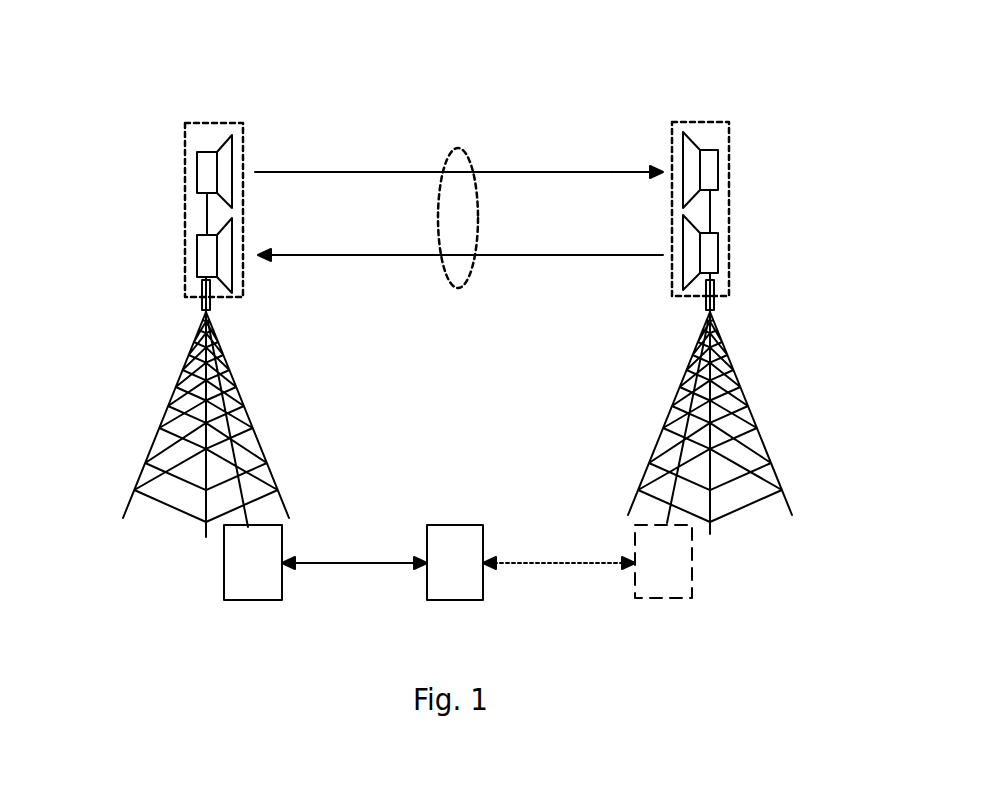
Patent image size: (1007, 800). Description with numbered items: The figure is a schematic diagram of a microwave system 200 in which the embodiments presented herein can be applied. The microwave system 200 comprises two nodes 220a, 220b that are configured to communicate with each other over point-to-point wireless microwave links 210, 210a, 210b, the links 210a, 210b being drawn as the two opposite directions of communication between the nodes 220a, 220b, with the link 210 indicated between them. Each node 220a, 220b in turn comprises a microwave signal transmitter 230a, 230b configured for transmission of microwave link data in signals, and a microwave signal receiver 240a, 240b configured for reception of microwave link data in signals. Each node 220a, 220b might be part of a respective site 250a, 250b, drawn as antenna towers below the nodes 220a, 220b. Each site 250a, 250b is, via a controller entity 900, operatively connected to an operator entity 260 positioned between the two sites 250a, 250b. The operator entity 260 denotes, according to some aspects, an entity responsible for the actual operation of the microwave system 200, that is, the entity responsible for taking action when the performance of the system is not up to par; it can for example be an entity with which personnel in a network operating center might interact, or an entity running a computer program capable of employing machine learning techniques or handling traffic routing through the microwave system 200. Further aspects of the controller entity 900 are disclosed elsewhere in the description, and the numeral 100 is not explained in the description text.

The system (next sheet, partially shown) 100 is at (68, 794).
The microwave system 200 is at (136, 61).
The point-to-point wireless microwave link 210 is at (460, 149).
The point-to-point wireless microwave link 210a is at (555, 172).
The point-to-point wireless microwave link 210b is at (540, 257).
The node 220a is at (187, 208).
The node 220b is at (729, 200).
The microwave signal transmitter 230a is at (196, 164).
The microwave signal transmitter 230b is at (718, 243).
The microwave signal receiver 240a is at (196, 245).
The microwave signal receiver 240b is at (718, 160).
The site 250a is at (179, 367).
The site 250b is at (737, 362).
The operator entity 260 is at (450, 525).
The controller entity 900 is at (224, 583).